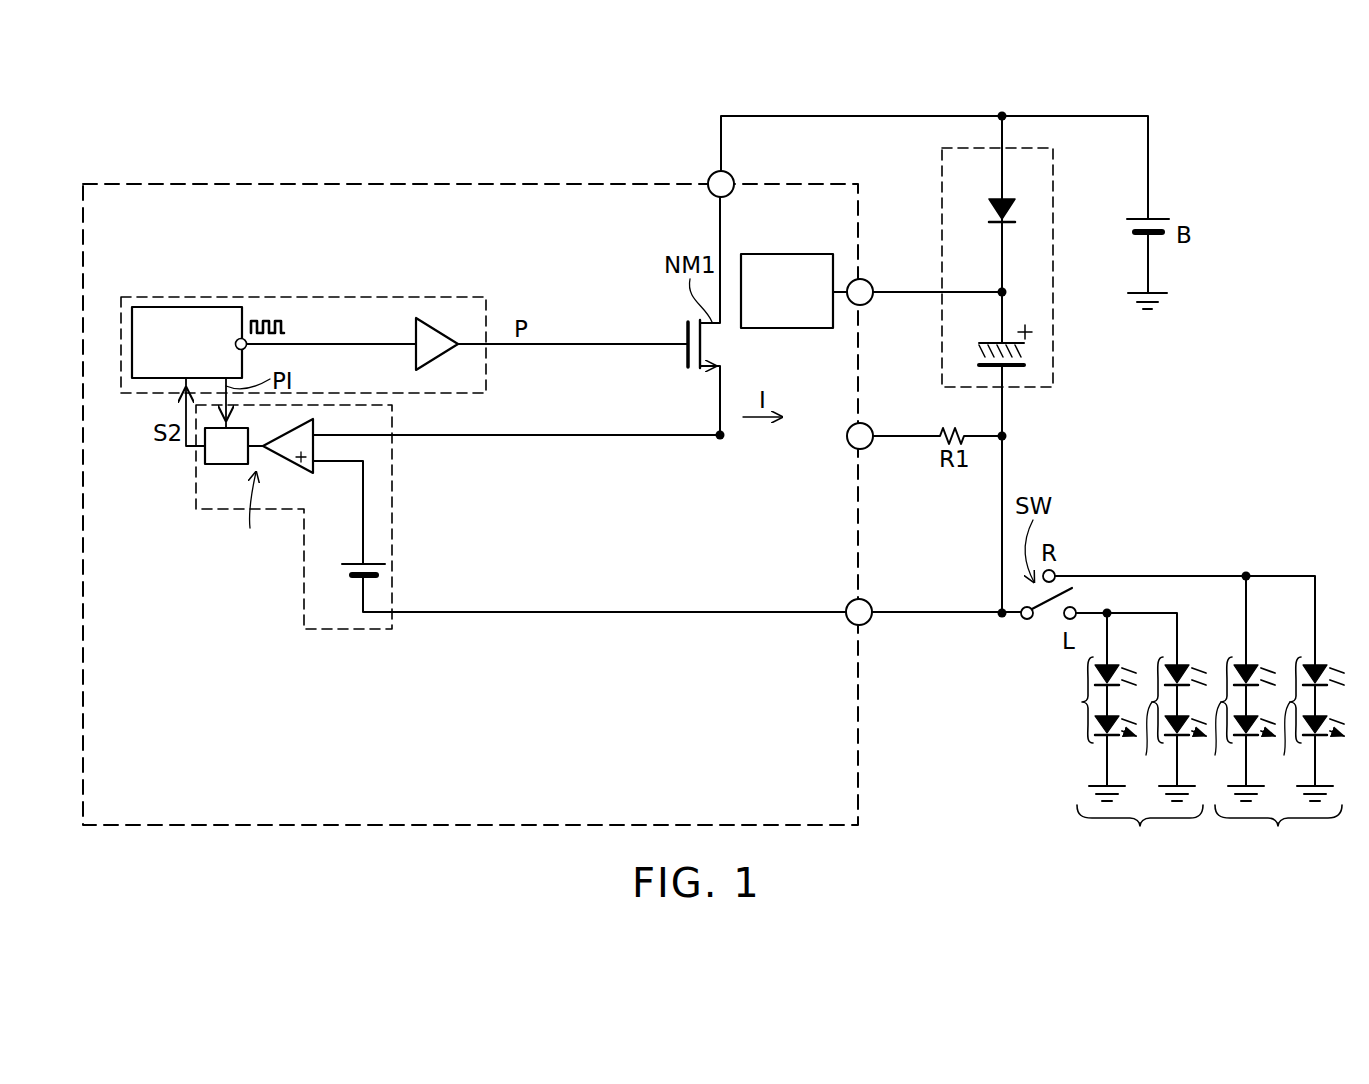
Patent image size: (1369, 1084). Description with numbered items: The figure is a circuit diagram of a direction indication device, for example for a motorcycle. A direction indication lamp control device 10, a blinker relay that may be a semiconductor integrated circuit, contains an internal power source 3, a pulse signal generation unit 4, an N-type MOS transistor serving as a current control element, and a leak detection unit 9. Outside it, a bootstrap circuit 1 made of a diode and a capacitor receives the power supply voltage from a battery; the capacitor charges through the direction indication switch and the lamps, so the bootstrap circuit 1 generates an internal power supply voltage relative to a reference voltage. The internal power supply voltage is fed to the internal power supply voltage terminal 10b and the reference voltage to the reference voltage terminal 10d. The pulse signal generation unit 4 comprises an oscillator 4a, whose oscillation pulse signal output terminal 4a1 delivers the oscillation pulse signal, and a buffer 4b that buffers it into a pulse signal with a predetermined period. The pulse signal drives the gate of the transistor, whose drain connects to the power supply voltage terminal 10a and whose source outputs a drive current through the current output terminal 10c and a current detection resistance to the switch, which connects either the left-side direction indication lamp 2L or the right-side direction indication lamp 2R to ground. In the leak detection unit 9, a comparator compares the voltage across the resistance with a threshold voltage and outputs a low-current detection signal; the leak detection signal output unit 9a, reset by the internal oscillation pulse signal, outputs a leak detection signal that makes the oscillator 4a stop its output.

The bootstrap circuit 1 is at (1053, 357).
The left-side direction indication lamp 2L is at (1127, 734).
The right-side direction indication lamp 2R is at (1199, 715).
The internal power source 3 is at (787, 254).
The pulse signal generation unit 4 is at (318, 296).
The oscillator 4a is at (190, 307).
The oscillation pulse signal output terminal 4a1 is at (242, 338).
The buffer 4b is at (416, 333).
The leak detection unit 9 is at (214, 512).
The leak detection signal output unit 9a is at (224, 466).
The direction indication lamp control device 10 is at (500, 182).
The power supply voltage terminal 10a is at (731, 175).
The internal power supply voltage terminal 10b is at (868, 303).
The current output terminal 10c is at (866, 447).
The reference voltage terminal 10d is at (862, 599).